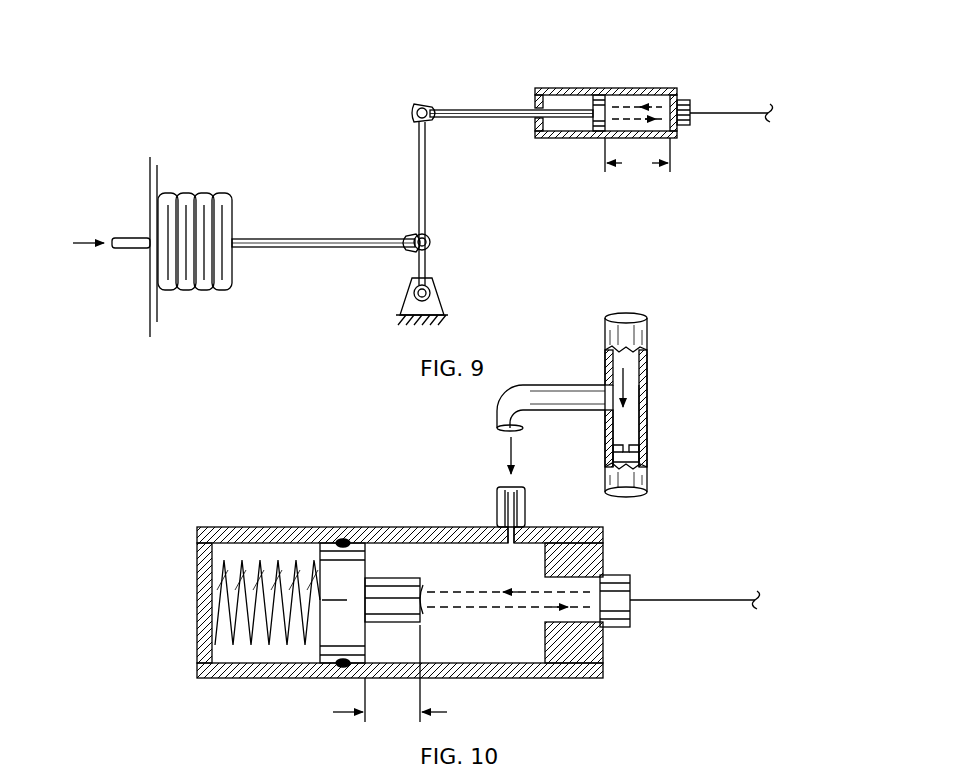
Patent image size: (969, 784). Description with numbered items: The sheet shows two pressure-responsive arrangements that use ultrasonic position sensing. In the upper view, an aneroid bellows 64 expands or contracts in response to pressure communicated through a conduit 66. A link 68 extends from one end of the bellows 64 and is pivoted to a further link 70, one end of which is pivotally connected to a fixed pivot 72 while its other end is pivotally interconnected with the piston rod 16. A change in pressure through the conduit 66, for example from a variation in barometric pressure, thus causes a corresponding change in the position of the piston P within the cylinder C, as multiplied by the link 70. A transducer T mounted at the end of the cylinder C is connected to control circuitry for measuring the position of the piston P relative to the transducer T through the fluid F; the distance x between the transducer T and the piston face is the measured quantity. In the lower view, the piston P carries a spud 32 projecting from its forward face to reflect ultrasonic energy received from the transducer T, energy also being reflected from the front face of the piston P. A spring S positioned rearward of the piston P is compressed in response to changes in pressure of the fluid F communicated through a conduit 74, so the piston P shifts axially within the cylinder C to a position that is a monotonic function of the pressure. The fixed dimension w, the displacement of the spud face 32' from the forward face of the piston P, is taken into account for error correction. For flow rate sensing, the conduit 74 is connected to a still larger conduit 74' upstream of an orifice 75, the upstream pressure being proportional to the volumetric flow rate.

In FIG. 9, the piston rod 16 is at (455, 108).
In FIG. 9, the aneroid bellows 64 is at (200, 190).
In FIG. 9, the conduit 66 is at (130, 238).
In FIG. 9, the link 68 is at (290, 238).
In FIG. 9, the link 70 is at (428, 197).
In FIG. 9, the pivot 72 is at (440, 300).
In FIG. 10, the conduit 74 is at (520, 464).
In FIG. 10, the larger conduit 74' is at (673, 405).
In FIG. 10, the orifice 75 is at (626, 440).
In FIG. 10, the spud 32 is at (417, 650).
In FIG. 10, the spud face 32' is at (397, 520).
In FIG. 9, the cylinder C is at (630, 88).
In FIG. 10, the cylinder C is at (422, 527).
In FIG. 9, the piston P is at (597, 95).
In FIG. 10, the piston P is at (351, 605).
In FIG. 9, the fluid F is at (552, 138).
In FIG. 10, the fluid F is at (469, 634).
In FIG. 9, the transducer T is at (683, 130).
In FIG. 10, the transducer T is at (612, 627).
In FIG. 10, the spring S is at (270, 645).